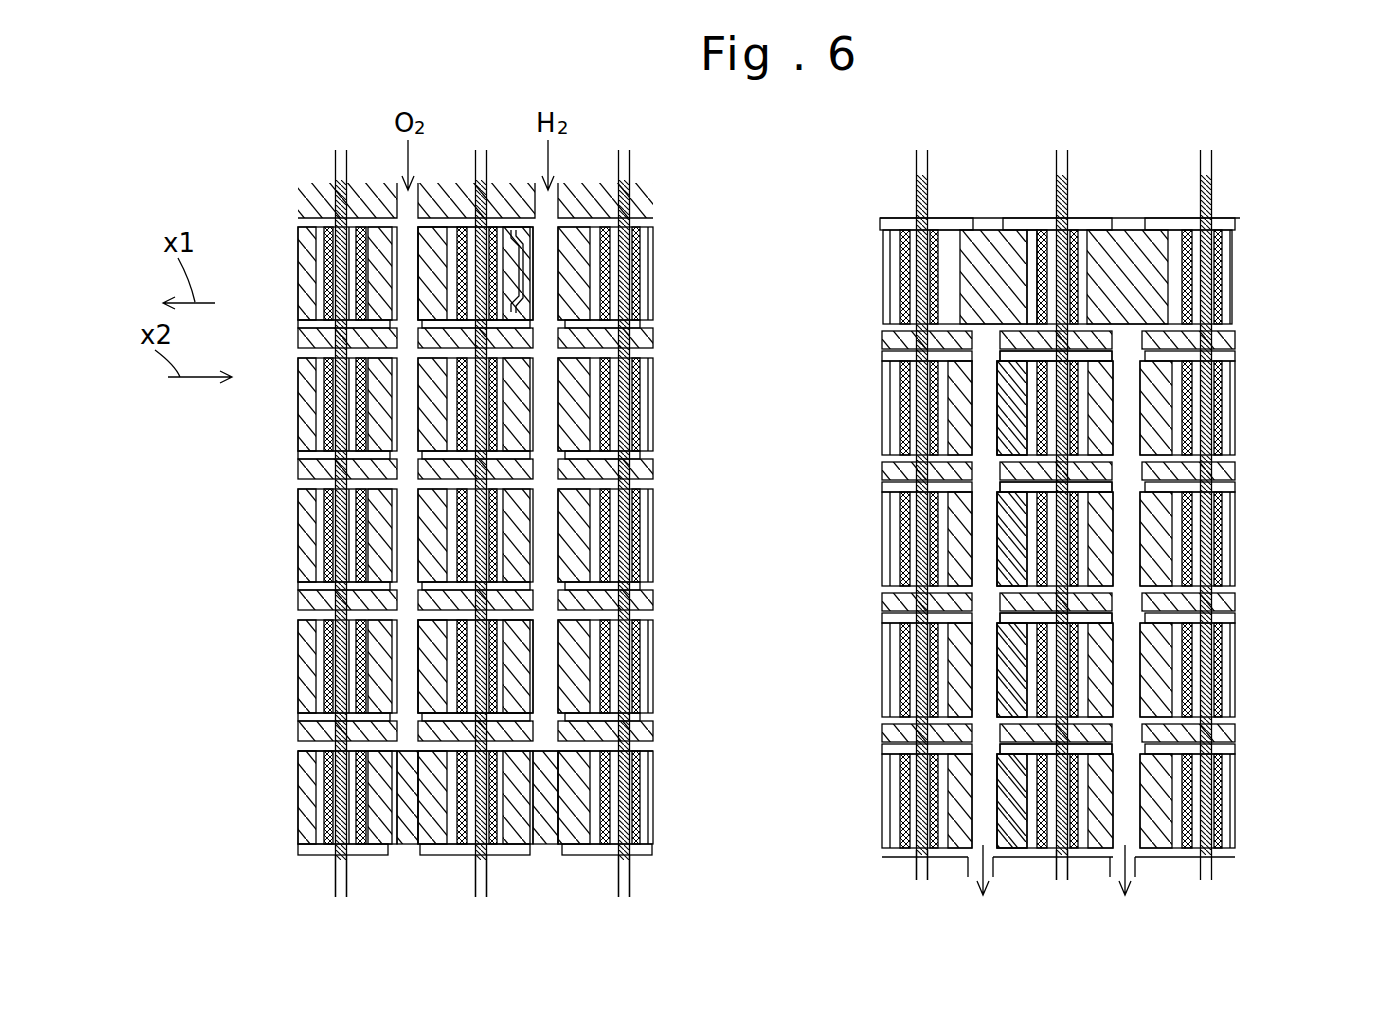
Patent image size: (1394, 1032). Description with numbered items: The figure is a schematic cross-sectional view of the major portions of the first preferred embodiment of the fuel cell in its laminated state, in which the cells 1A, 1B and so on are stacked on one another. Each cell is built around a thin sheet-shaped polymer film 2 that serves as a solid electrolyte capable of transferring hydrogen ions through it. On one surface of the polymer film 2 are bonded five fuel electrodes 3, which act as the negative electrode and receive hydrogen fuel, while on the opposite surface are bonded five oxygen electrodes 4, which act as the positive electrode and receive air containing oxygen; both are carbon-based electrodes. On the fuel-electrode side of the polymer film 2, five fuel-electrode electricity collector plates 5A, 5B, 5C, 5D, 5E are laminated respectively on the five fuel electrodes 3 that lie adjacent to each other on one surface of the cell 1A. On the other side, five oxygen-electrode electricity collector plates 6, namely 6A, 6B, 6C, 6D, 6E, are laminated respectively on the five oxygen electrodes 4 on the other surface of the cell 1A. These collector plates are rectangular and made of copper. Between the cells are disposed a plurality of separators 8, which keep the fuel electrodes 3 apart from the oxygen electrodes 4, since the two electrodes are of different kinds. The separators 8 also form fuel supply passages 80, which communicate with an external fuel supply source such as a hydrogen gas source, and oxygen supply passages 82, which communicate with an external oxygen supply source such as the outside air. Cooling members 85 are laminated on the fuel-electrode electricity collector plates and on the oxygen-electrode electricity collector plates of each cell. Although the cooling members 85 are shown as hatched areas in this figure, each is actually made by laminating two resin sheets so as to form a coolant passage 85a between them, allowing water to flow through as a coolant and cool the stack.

The cell 1A is at (1066, 894).
The cell 1B is at (926, 894).
The polymer film 2 is at (1205, 880).
The fuel electrode 3 is at (1225, 811).
The oxygen electrode 4 is at (1228, 833).
The fuel-electrode electricity collector plate 5A is at (1080, 232).
The fuel-electrode electricity collector plate 5B is at (1230, 370).
The fuel-electrode electricity collector plate 5C is at (1230, 501).
The fuel-electrode electricity collector plate 5D is at (1230, 632).
The fuel-electrode electricity collector plate 5E is at (1230, 763).
The oxygen-electrode electricity collector plate 6 is at (1030, 255).
The oxygen-electrode electricity collector plate 6A is at (1025, 250).
The oxygen-electrode electricity collector plate 6B is at (965, 388).
The oxygen-electrode electricity collector plate 6C is at (965, 519).
The oxygen-electrode electricity collector plate 6D is at (965, 650).
The oxygen-electrode electricity collector plate 6E is at (965, 781).
The separator 8 is at (1147, 250).
The fuel supply passage 80 is at (540, 672).
The oxygen supply passage 82 is at (335, 205).
The cooling member 85 is at (1228, 779).
The coolant passage 85a is at (557, 240).